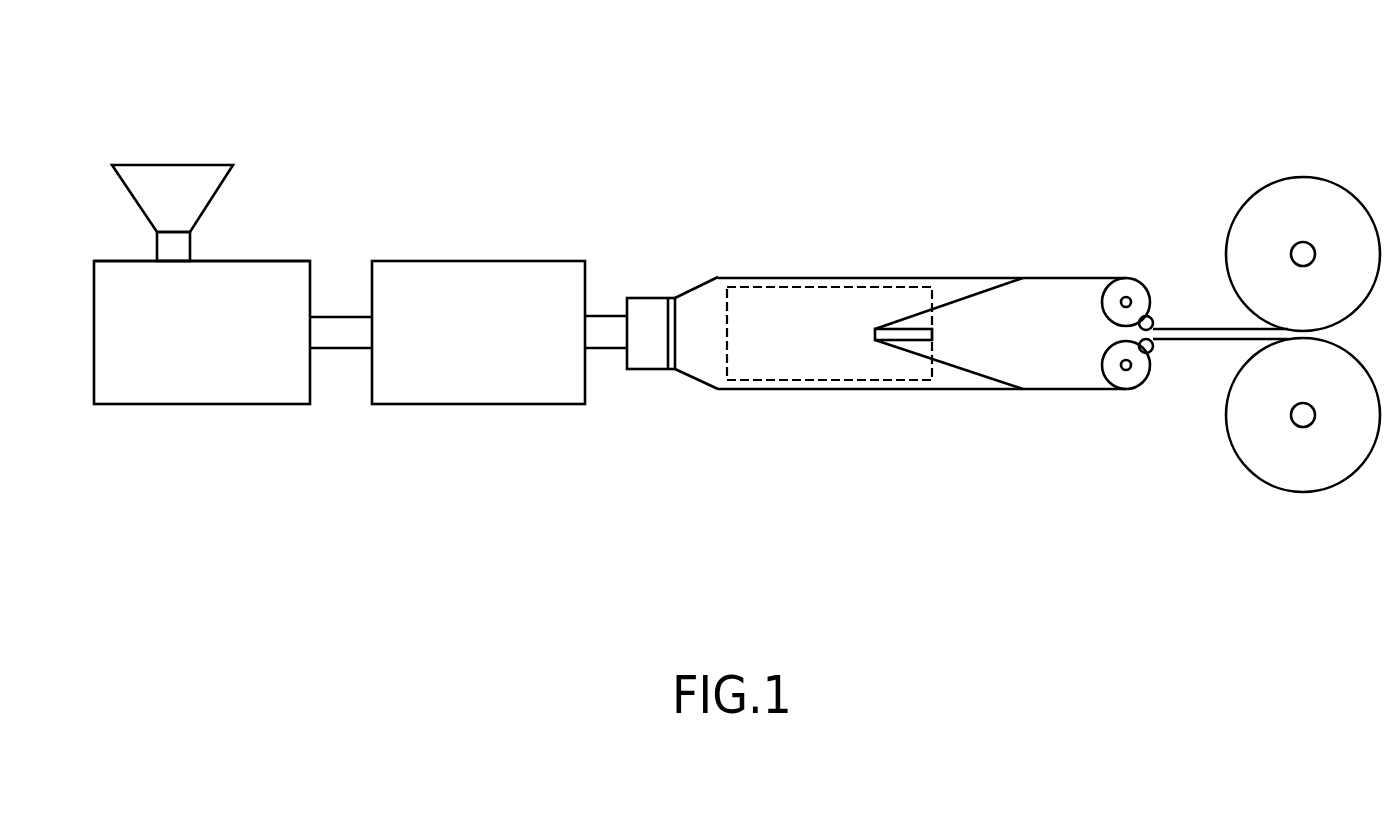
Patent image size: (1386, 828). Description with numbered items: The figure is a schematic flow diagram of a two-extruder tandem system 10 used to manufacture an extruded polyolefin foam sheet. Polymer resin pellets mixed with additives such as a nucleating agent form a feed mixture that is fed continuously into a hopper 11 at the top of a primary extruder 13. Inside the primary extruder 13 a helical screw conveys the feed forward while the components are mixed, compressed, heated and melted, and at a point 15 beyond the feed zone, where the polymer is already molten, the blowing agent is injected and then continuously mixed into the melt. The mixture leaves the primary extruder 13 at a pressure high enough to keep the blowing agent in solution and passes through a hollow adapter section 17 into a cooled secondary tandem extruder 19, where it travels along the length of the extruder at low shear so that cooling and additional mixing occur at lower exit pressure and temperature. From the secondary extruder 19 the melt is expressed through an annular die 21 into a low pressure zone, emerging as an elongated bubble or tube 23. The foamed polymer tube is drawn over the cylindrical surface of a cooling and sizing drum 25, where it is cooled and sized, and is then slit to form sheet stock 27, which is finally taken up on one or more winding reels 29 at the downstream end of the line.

The two-extruder tandem system 10 is at (603, 490).
The hopper 11 is at (182, 165).
The primary extruder 13 is at (202, 404).
The blowing agent injection point 15 is at (273, 261).
The hollow adapter section 17 is at (340, 317).
The secondary tandem extruder 19 is at (482, 404).
The annular die 21 is at (652, 298).
The elongated bubble or tube 23 is at (832, 278).
The cooling and sizing drum 25 is at (792, 405).
The sheet stock 27 is at (1072, 278).
The winding reels 29 is at (1203, 355).